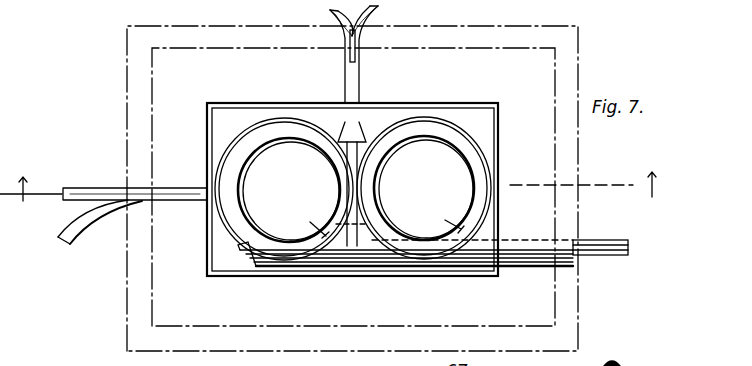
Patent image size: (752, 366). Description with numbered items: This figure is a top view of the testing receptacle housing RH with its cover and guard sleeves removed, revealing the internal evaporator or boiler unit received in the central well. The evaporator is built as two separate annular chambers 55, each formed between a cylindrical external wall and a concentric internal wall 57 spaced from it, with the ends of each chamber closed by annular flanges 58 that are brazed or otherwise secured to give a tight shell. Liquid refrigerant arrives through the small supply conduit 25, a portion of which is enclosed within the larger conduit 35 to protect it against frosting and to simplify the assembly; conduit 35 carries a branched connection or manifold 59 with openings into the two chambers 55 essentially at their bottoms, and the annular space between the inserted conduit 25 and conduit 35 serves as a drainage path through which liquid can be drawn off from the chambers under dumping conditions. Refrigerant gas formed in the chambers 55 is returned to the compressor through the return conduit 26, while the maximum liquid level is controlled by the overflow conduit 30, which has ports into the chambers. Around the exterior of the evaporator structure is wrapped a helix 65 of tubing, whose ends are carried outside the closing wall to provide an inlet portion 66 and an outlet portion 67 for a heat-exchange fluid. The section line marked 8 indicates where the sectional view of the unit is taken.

The testing receptacle housing RH is at (565, 57).
The helix of tubing 65 is at (437, 113).
The conduit 35 is at (360, 70).
The supply conduit 25 is at (328, 12).
The branched connection or manifold 59 is at (343, 142).
The concentric internal walls 57 is at (246, 165).
The annular chambers 55 is at (356, 189).
The annular flanges 58 is at (373, 222).
The return conduit 26 is at (565, 238).
The overflow conduit 30 is at (629, 243).
The outlet portion 67 is at (78, 188).
The inlet portion 66 is at (80, 234).
The section line 8- 8 is at (336, 188).